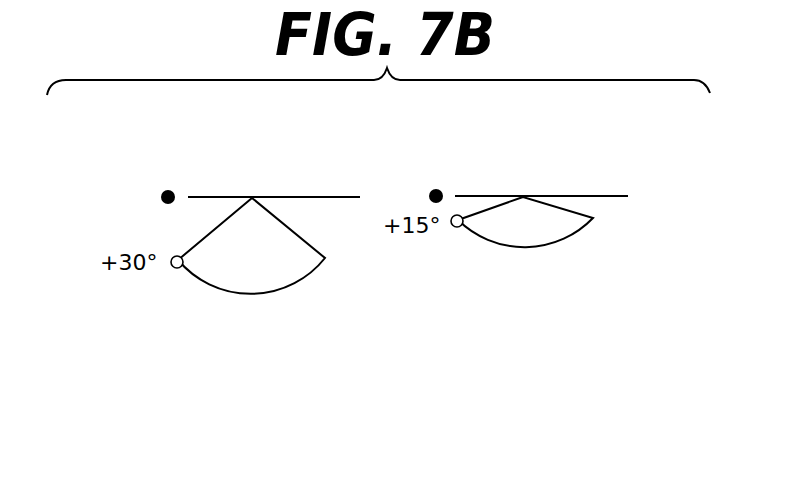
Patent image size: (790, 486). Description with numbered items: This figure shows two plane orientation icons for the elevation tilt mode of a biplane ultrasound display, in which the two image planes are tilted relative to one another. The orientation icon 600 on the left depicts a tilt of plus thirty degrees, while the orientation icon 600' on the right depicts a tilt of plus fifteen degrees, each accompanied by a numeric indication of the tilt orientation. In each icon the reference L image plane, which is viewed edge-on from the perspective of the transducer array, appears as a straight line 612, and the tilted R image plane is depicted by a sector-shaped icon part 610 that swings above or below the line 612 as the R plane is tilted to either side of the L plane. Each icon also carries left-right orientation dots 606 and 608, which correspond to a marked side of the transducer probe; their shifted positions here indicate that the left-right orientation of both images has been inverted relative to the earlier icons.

The image orientation icon 600 is at (230, 151).
The image orientation icon 600' is at (560, 141).
The left-right orientation dot 606 is at (161, 197).
The left-right orientation dot 608 is at (176, 270).
The sector-shaped icon part 610 is at (301, 284).
The straight line 612 is at (303, 195).